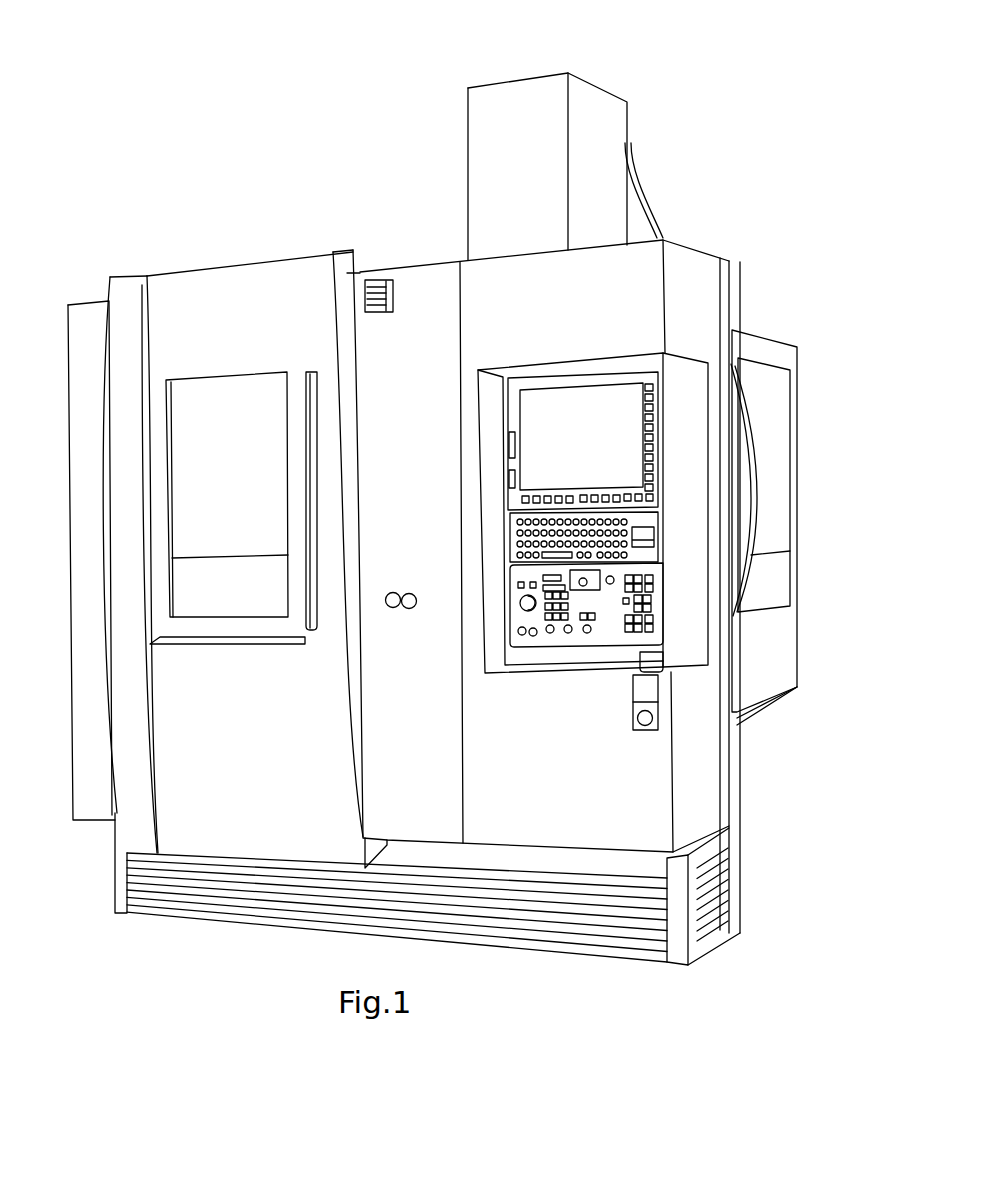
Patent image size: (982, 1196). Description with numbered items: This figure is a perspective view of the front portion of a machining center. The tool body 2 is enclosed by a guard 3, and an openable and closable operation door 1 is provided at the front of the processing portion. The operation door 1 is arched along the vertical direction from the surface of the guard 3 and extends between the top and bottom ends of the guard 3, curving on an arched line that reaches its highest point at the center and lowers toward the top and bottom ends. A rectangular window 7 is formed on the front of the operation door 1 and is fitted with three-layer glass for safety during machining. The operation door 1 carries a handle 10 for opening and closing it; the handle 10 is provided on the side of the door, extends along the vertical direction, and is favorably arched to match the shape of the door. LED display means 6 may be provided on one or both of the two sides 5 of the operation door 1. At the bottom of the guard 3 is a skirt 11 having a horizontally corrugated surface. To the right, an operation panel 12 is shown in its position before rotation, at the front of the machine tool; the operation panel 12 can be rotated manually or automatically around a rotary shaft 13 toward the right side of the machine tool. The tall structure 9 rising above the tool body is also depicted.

The operation door 1 is at (220, 282).
The tool body 2 is at (684, 219).
The guard 3 is at (92, 325).
The sides of the operation door 5 is at (128, 287).
The LED display means 6 is at (378, 282).
The window 7 is at (203, 508).
The column 9 is at (515, 95).
The handle 10 is at (305, 447).
The skirt 11 is at (648, 914).
The operation panel 12 is at (625, 415).
The rotary shaft 13 is at (653, 660).